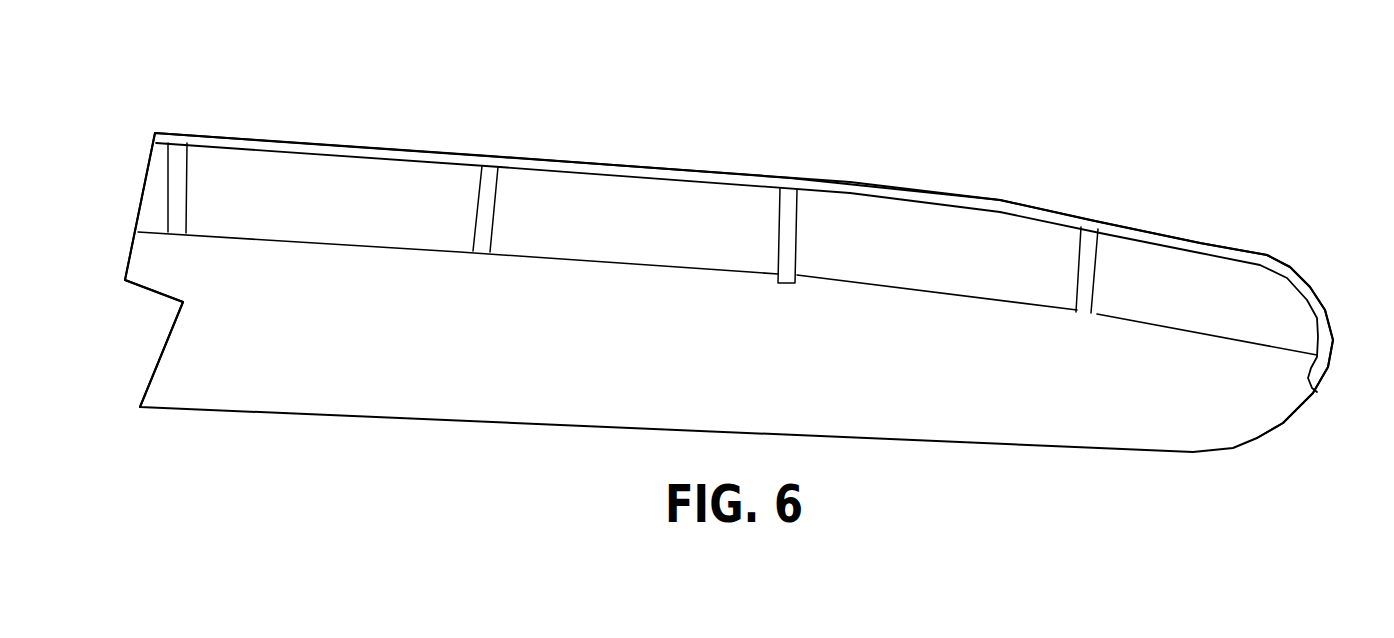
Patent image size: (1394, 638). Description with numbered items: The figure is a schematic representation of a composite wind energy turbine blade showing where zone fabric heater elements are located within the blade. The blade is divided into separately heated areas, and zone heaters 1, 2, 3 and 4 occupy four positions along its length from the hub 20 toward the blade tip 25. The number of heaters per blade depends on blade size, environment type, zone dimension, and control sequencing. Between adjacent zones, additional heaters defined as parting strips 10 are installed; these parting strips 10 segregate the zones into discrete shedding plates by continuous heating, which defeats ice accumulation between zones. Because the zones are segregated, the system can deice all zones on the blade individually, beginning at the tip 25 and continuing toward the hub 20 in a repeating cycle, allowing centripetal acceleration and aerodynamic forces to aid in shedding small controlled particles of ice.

The zone heater 1 is at (322, 161).
The zone heater 2 is at (640, 182).
The zone heater 3 is at (940, 211).
The zone heater 4 is at (1200, 255).
The parting strip 10 is at (577, 158).
The hub 20 is at (131, 270).
The blade tip 25 is at (1321, 362).